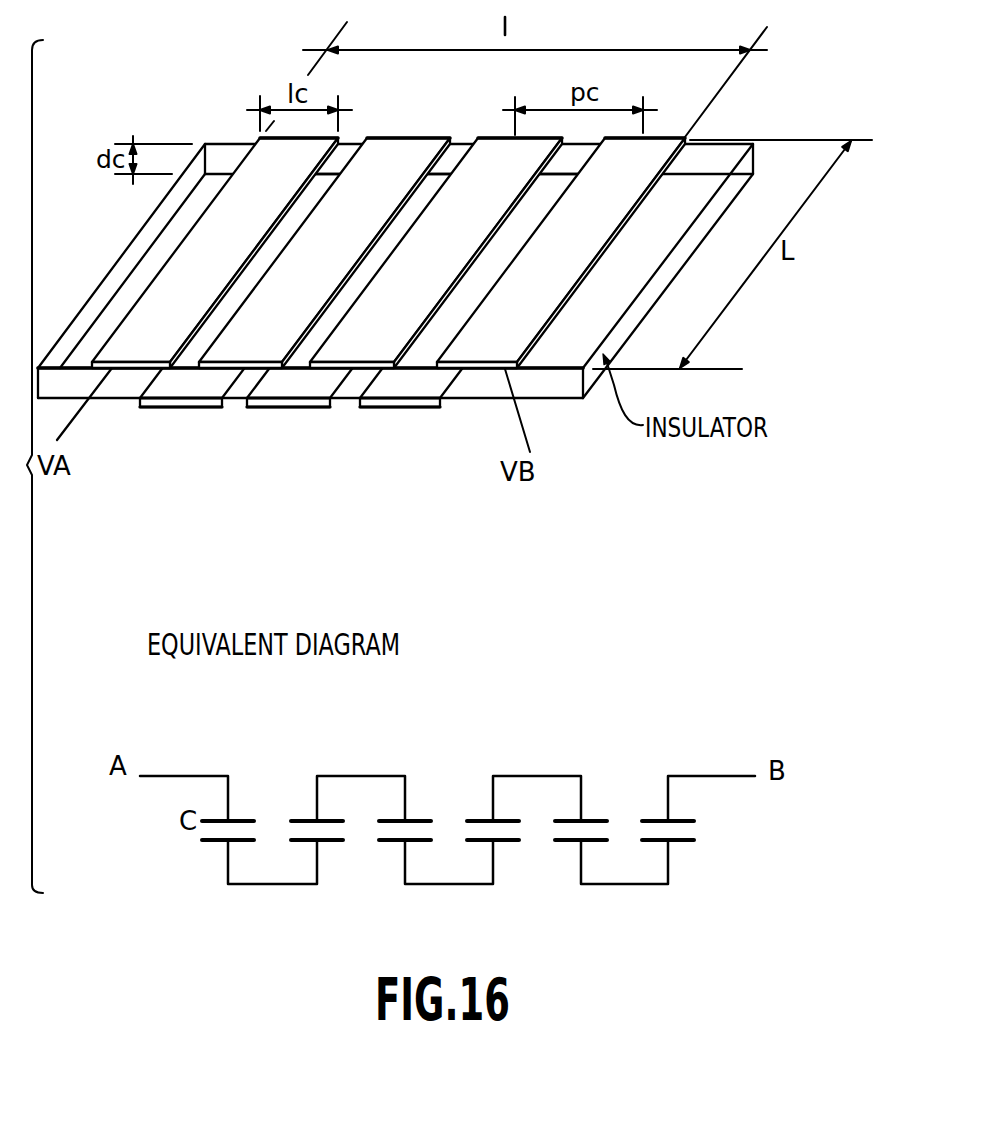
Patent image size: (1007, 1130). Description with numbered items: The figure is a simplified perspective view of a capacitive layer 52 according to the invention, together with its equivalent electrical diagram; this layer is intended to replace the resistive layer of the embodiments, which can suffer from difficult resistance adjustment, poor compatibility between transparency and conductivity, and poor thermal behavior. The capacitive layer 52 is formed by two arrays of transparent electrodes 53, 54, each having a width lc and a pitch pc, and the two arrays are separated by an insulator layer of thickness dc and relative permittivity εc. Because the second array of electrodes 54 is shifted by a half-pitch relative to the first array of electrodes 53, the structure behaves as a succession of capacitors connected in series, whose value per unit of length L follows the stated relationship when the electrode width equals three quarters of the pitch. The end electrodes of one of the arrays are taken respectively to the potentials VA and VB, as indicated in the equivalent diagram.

The capacitive layer 52 is at (687, 288).
The transparent electrodes of the first array 53 is at (146, 273).
The transparent electrodes of the second array 54 is at (162, 420).